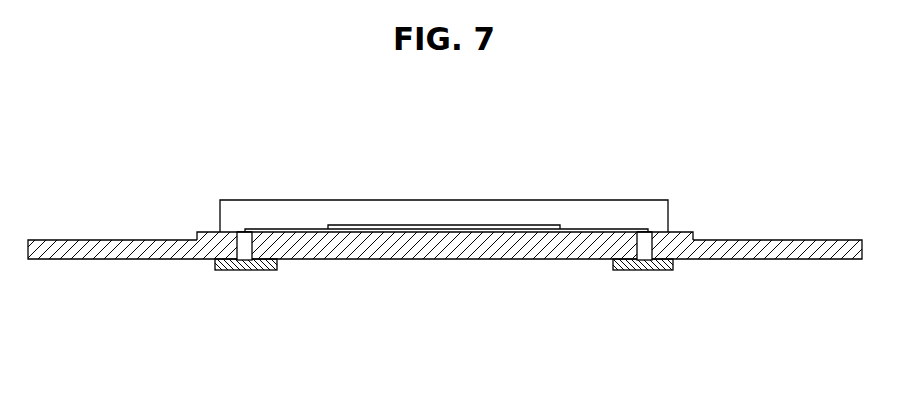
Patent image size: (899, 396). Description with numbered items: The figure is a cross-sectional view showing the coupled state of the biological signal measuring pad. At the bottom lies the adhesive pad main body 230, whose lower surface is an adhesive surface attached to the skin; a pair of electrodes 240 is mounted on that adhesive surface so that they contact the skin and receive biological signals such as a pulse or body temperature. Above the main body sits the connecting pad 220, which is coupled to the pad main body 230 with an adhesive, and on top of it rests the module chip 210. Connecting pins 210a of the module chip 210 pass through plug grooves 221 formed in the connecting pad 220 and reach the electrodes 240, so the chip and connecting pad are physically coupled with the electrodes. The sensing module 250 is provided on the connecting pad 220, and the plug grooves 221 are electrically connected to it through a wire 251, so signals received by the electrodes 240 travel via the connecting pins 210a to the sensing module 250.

The module chip 210 is at (525, 200).
The connecting pin 210a is at (245, 272).
The connecting pad 220 is at (693, 236).
The plug groove 221 is at (238, 232).
The adhesive pad main body 230 is at (793, 260).
The electrode 240 is at (220, 272).
The sensing module 250 is at (423, 225).
The wire 251 is at (597, 229).